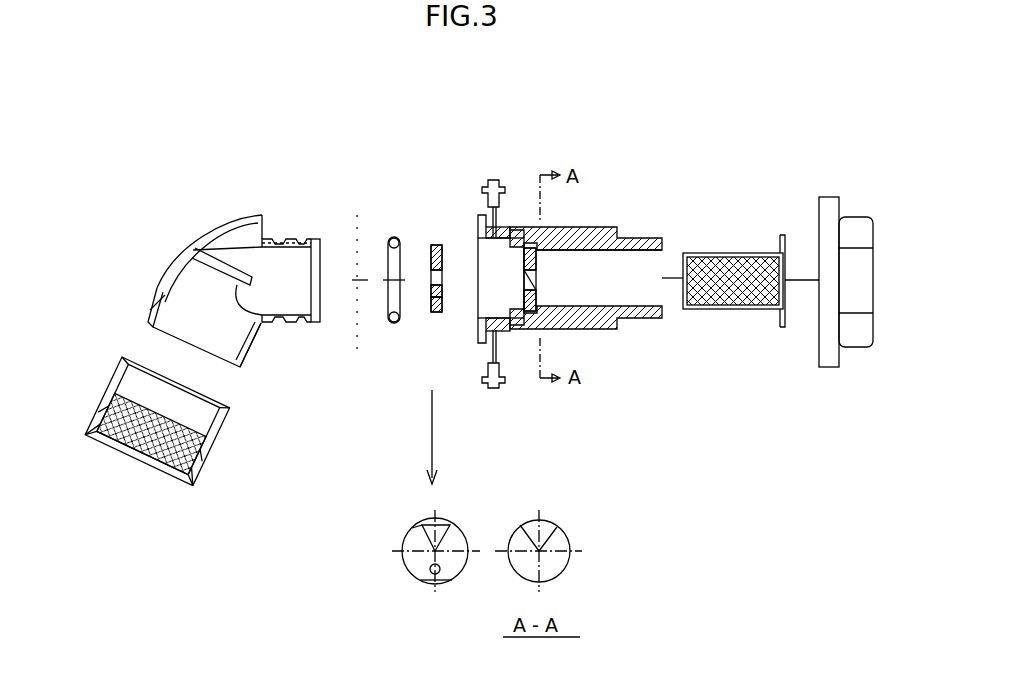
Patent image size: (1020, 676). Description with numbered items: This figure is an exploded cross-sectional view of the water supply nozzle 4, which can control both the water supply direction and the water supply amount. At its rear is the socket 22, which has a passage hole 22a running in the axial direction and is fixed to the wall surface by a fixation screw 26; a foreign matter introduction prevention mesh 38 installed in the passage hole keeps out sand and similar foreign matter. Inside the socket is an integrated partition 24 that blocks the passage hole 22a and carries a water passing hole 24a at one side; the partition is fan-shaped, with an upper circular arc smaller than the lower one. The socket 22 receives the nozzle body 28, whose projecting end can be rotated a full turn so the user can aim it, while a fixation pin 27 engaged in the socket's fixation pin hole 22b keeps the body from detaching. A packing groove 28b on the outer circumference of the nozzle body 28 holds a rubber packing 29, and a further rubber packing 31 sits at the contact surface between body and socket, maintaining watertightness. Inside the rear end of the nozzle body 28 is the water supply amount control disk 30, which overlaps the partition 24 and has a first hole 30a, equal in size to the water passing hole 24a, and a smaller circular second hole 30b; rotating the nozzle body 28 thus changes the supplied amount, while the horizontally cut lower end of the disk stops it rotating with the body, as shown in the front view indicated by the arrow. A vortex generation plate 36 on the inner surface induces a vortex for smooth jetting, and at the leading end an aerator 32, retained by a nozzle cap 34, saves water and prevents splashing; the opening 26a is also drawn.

The water supply nozzle 4 is at (83, 201).
The socket 22 is at (650, 250).
The passage hole 22a is at (603, 258).
The fixation pin hole 22b is at (500, 340).
The partition 24 is at (543, 292).
The water passing hole 24a is at (527, 227).
The fixation screw 26 is at (830, 338).
The nozzle opening 26a is at (180, 315).
The fixation pin 27 is at (487, 180).
The nozzle body 28 is at (193, 247).
The packing groove 28b is at (305, 238).
The rubber packing 29 is at (398, 237).
The water supply amount control disk 30 is at (430, 312).
The first hole 30a is at (443, 243).
The second hole 30b is at (443, 313).
The rubber packing 31 is at (362, 217).
The aerator 32 is at (135, 458).
The nozzle cap 34 is at (203, 462).
The vortex generation plate 36 is at (262, 330).
The foreign matter introduction prevention mesh 38 is at (720, 253).